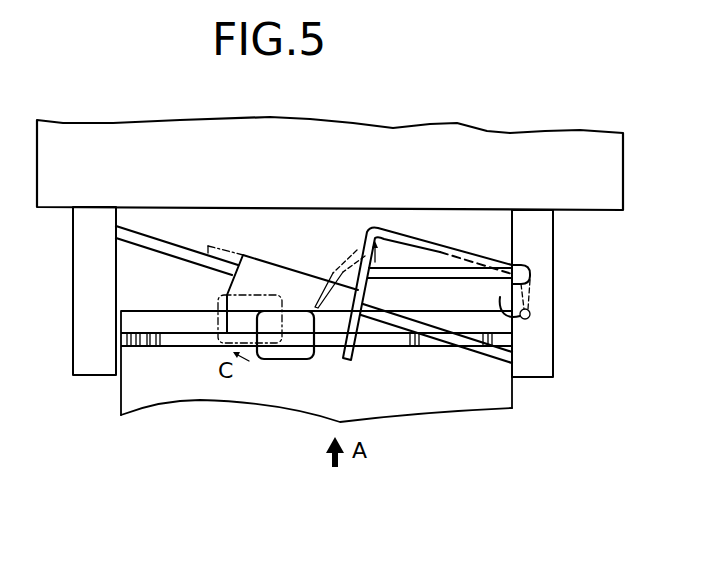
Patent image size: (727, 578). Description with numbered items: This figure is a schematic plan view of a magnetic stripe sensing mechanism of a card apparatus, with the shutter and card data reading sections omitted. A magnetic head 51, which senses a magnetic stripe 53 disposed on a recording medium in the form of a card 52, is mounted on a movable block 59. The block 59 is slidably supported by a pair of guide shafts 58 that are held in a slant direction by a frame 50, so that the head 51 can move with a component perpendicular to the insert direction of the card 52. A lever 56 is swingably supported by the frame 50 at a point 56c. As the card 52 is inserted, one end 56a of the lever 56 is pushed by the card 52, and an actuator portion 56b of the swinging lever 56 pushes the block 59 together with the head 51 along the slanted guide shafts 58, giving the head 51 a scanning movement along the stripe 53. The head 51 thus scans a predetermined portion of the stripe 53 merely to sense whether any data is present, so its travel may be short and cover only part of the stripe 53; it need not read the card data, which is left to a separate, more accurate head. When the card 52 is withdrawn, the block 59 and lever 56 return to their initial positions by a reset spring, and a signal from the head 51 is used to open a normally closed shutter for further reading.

The frame 50 is at (540, 352).
The magnetic head 51 is at (287, 348).
The card 52 is at (488, 401).
The magnetic stripe 53 is at (140, 340).
The lever 56 is at (412, 262).
The one end of the lever 56a is at (500, 303).
The actuator portion 56b is at (350, 262).
The point 56c is at (530, 312).
The guide shafts 58 is at (170, 244).
The movable block 59 is at (258, 276).